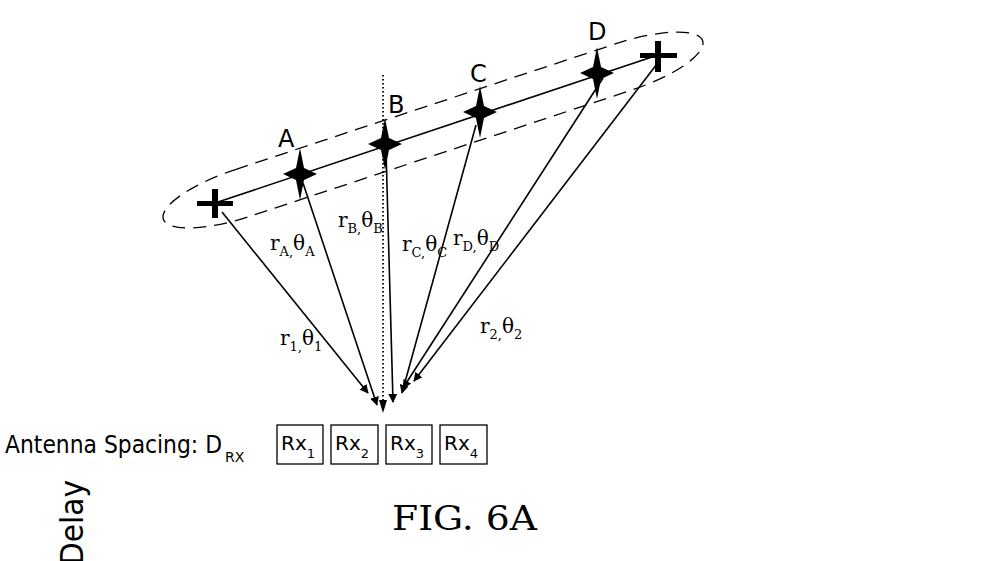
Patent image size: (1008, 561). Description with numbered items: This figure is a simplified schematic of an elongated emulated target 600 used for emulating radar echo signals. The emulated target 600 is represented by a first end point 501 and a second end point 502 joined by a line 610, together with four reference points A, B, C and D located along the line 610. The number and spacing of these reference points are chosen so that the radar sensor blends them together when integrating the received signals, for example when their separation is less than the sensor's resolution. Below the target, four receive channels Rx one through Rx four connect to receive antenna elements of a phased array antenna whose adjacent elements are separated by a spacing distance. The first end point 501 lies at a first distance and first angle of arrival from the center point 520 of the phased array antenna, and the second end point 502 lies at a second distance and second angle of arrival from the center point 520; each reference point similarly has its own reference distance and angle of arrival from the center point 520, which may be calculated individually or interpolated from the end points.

The first end point 501 is at (186, 174).
The second end point 502 is at (689, 91).
The center point 520 is at (351, 221).
The emulated target 600 is at (433, 130).
The line 610 is at (436, 115).